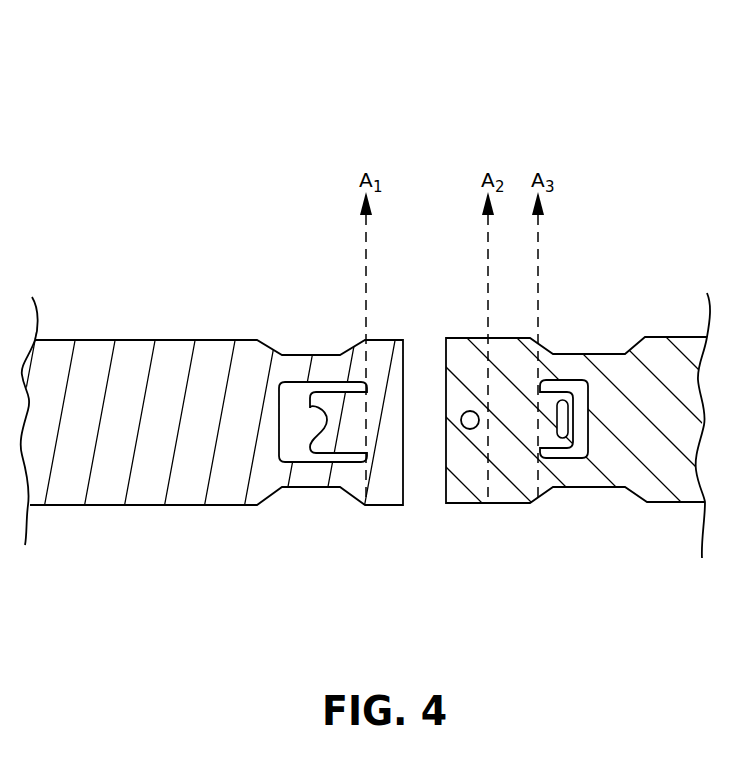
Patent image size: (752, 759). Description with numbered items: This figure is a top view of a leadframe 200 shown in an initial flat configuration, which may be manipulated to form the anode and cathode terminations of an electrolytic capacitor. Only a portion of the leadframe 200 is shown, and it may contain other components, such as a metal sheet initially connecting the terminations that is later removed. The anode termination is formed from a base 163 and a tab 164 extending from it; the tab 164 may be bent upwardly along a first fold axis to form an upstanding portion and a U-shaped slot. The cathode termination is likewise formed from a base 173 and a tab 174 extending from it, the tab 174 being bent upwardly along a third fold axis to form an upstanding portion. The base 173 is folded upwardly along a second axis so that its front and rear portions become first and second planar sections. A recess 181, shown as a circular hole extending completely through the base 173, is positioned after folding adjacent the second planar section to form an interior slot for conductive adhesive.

The leadframe 200 is at (171, 127).
The base 163 is at (210, 367).
The tab 164 is at (337, 437).
The base 173 is at (650, 353).
The tab 174 is at (563, 437).
The recess 181 is at (463, 410).